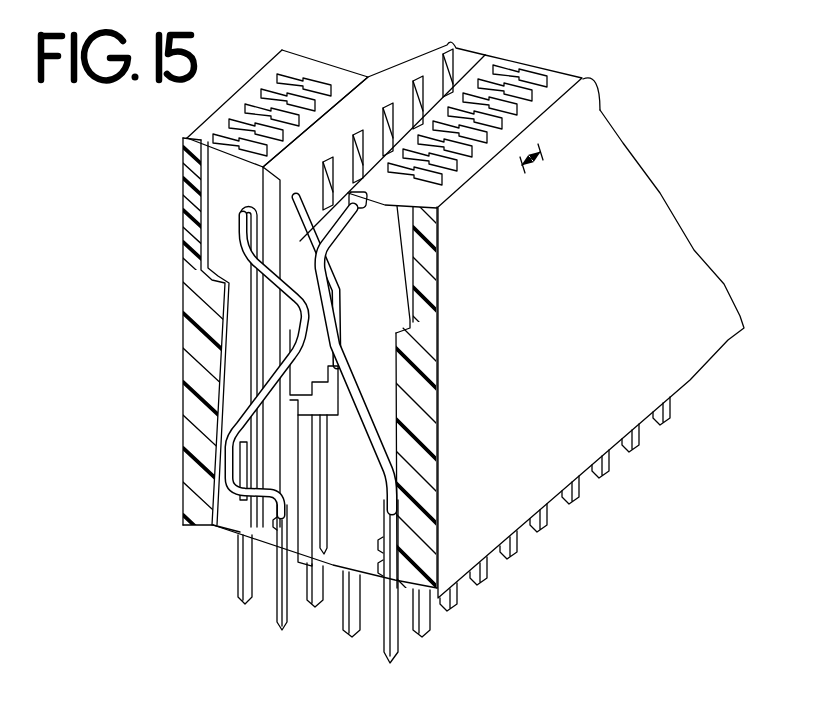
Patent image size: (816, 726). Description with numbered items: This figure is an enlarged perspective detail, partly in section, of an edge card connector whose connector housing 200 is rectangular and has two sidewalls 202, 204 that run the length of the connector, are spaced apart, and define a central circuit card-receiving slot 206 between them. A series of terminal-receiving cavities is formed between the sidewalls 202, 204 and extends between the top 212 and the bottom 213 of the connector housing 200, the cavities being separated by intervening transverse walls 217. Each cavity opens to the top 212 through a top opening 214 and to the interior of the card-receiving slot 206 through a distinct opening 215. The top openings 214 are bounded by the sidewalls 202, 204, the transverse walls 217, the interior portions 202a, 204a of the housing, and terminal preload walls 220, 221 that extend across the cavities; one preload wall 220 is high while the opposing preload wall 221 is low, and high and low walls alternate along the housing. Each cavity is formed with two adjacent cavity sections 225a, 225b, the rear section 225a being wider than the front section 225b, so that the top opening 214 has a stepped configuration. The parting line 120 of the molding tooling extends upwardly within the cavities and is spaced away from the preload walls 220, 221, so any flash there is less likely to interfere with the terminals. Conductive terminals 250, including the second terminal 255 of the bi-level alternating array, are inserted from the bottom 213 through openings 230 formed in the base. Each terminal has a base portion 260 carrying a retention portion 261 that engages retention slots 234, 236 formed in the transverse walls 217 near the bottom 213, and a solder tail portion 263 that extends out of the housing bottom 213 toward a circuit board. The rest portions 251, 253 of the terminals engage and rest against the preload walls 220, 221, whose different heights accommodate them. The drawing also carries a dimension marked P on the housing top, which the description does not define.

The connector housing 200 is at (180, 327).
The sidewall 202 is at (705, 333).
The interior portion of the connector housing 202a is at (560, 80).
The sidewall 204 is at (182, 183).
The interior portion of the connector housing 204a is at (222, 123).
The central circuit card-receiving slot 206 is at (462, 66).
The top of the connector housing 212 is at (235, 100).
The bottom of the connector housing 213 is at (600, 470).
The top openings 214 is at (268, 93).
The openings to the card-receiving slot 215 is at (425, 58).
The transverse walls 217 is at (517, 100).
The terminal preload wall 220 is at (343, 197).
The terminal preload wall 221 is at (268, 178).
The rear cavity section 225a is at (217, 150).
The front cavity section 225b is at (328, 88).
The openings in the housing bottom 230 is at (230, 538).
The retention slot 234 is at (443, 598).
The retention slot 236 is at (235, 512).
The conductive terminals 250 is at (380, 618).
The rest portion 251 is at (417, 240).
The rest portion 253 is at (240, 210).
The second terminal 255 is at (372, 410).
The base portion 260 is at (235, 488).
The retention portion 261 is at (270, 577).
The solder tail portion 263 is at (400, 650).
The parting line 120 is at (238, 242).
The contact pitch P is at (541, 160).